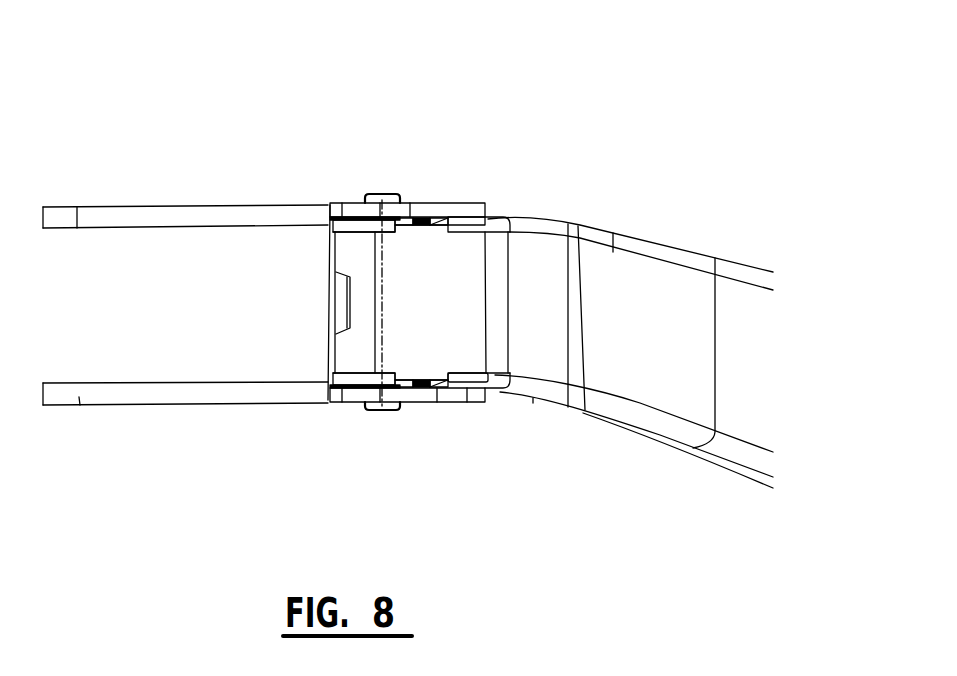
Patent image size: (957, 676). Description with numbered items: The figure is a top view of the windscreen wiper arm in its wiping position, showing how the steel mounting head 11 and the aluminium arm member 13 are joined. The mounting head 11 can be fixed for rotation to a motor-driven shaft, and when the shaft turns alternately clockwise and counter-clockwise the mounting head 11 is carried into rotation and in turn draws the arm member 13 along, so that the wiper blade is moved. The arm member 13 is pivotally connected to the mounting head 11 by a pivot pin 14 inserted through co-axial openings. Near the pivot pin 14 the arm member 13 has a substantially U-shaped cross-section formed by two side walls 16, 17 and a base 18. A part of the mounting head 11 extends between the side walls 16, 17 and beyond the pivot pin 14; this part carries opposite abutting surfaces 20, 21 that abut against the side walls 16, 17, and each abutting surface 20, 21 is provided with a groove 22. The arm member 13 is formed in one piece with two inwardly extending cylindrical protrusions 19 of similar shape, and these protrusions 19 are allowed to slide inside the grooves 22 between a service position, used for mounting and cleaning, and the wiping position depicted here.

The mounting head 11 is at (632, 273).
The arm member 13 is at (198, 160).
The pivot pin 14 is at (382, 194).
The side wall 16 is at (173, 397).
The side wall 17 is at (241, 217).
The base 18 is at (90, 288).
The cylindrical protrusion 19 is at (437, 208).
The abutting surface 20 is at (481, 377).
The abutting surface 21 is at (488, 226).
The groove 22 is at (453, 228).